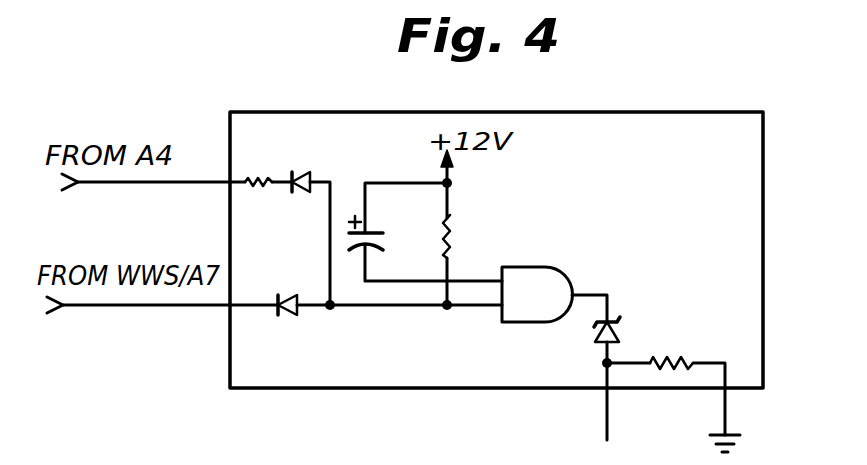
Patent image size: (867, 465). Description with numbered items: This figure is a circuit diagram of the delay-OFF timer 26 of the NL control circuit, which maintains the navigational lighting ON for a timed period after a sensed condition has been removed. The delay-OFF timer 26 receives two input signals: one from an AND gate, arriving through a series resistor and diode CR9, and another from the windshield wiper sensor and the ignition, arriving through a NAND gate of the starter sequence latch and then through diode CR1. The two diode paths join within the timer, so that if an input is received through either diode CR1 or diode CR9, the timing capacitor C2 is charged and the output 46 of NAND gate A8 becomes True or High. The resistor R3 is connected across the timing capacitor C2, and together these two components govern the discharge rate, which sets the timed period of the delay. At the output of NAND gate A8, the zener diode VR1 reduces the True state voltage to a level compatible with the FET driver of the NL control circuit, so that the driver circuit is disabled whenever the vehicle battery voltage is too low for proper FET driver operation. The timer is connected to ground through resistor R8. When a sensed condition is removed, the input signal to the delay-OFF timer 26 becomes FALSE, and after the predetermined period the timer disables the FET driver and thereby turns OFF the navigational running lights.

The delay-OFF timer 26 is at (208, 354).
The output 46 is at (604, 411).
The diode CR9 is at (308, 227).
The diode CR1 is at (379, 290).
The timing capacitor C2 is at (425, 232).
The resistor R3 is at (471, 244).
The NAND gate A8 is at (554, 294).
The zener diode VR1 is at (635, 334).
The resistor R8 is at (673, 393).